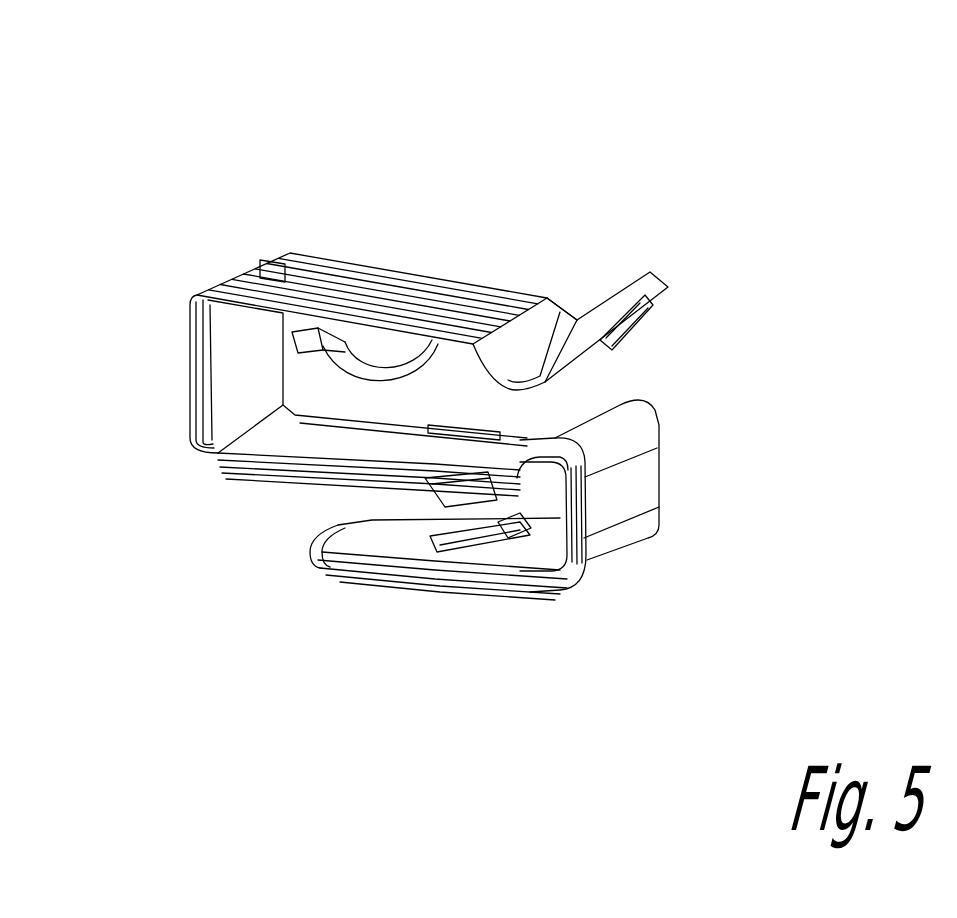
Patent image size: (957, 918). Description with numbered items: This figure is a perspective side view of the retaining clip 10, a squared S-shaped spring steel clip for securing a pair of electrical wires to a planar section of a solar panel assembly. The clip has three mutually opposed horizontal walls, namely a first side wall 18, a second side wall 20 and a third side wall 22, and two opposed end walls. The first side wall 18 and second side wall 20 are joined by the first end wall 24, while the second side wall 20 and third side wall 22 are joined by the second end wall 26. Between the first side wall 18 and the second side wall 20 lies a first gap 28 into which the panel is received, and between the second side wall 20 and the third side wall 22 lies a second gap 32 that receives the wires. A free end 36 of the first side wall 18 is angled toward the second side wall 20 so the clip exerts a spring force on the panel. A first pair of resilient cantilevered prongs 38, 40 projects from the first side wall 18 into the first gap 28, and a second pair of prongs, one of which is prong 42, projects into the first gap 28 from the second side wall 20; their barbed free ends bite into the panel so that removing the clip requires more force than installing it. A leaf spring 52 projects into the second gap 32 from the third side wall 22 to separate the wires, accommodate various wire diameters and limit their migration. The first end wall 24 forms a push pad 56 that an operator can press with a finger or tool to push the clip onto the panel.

The retaining clip 10 is at (499, 136).
The first side wall 18 is at (453, 590).
The second side wall 20 is at (315, 440).
The third side wall 22 is at (436, 265).
The first end wall 24 is at (648, 472).
The second end wall 26 is at (250, 352).
The first gap 28 is at (337, 522).
The second gap 32 is at (498, 418).
The free end 36 is at (340, 533).
The resilient cantilevered prong 38 is at (437, 560).
The resilient cantilevered prong 40 is at (510, 535).
The resilient cantilevered prong 42 is at (440, 492).
The leaf spring 52 is at (377, 338).
The push pad 56 is at (593, 503).